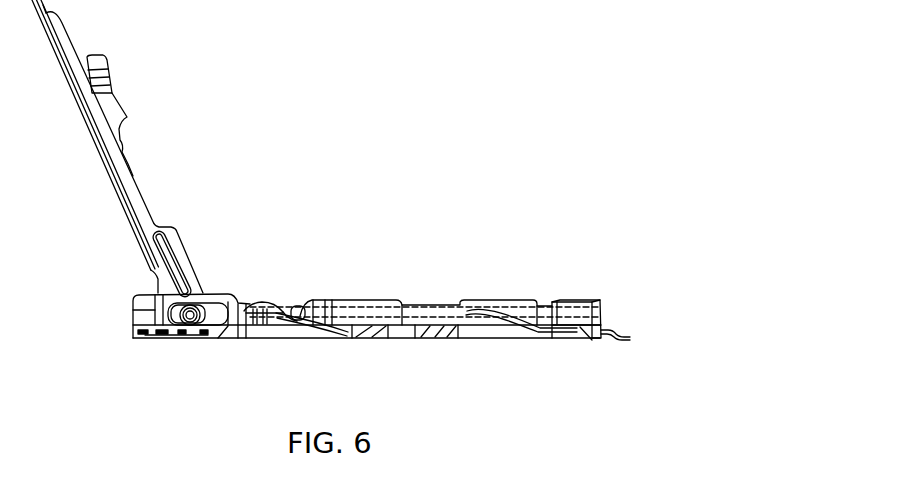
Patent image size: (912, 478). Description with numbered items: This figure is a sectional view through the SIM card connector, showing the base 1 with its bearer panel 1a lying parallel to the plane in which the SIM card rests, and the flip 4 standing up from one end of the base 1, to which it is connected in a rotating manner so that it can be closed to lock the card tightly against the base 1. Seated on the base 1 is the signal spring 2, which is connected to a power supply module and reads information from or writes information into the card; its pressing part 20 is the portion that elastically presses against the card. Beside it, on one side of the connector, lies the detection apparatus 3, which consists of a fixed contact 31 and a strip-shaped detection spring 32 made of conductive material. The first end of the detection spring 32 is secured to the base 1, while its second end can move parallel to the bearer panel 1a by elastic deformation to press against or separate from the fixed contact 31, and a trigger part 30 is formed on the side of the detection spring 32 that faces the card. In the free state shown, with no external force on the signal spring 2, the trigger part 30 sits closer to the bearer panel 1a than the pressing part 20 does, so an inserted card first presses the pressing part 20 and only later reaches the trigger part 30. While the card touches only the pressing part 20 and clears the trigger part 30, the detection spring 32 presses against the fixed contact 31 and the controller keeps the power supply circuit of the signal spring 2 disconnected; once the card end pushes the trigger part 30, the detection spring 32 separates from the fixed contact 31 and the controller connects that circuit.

The base 1 is at (357, 336).
The bearer panel 1a is at (380, 303).
The signal spring 2 is at (292, 327).
The detection apparatus 3 is at (315, 278).
The flip 4 is at (134, 178).
The pressing part 20 is at (259, 301).
The trigger part 30 is at (297, 305).
The fixed contact 31 is at (273, 328).
The detection spring 32 is at (335, 300).